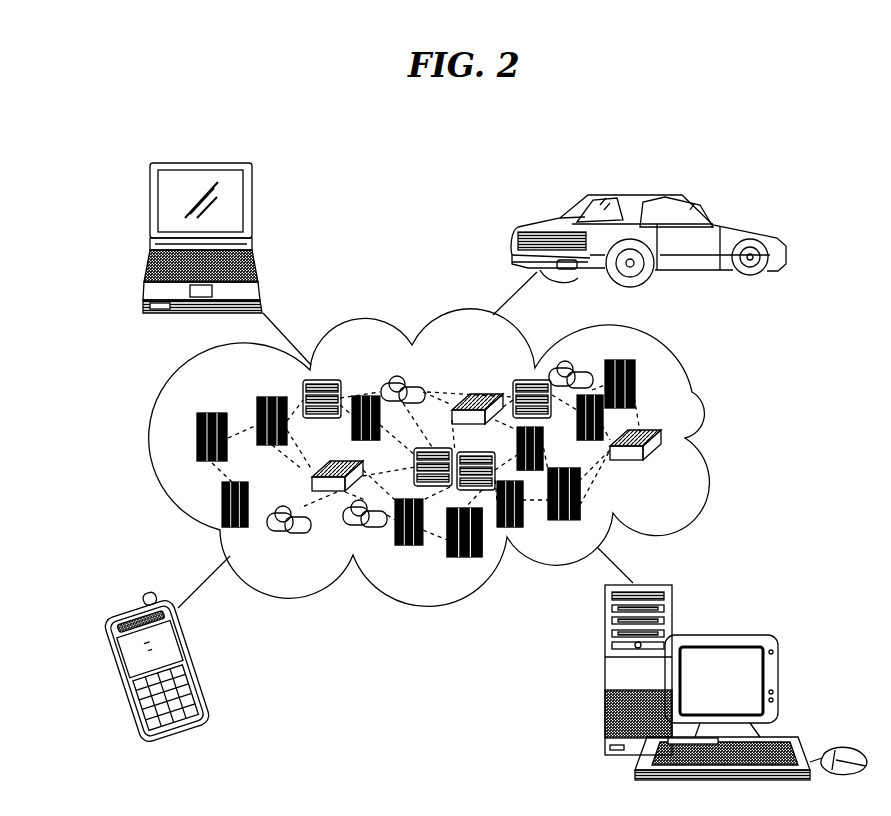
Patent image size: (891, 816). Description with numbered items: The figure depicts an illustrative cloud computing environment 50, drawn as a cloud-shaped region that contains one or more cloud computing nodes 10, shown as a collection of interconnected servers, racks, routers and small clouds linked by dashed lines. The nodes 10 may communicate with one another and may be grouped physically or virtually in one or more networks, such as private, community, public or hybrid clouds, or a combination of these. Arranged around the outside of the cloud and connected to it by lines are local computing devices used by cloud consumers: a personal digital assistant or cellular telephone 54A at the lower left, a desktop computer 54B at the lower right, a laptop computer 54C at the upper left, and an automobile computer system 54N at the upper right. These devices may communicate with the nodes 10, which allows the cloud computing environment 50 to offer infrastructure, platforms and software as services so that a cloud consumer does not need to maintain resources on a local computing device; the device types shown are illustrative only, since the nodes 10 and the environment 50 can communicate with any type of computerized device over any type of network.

The cloud computing environment 50 is at (692, 392).
The cloud computing nodes 10 is at (689, 490).
The personal digital assistant or cellular telephone 54A is at (112, 665).
The desktop computer 54B is at (733, 633).
The laptop computer 54C is at (170, 163).
The automobile computer system 54N is at (700, 203).